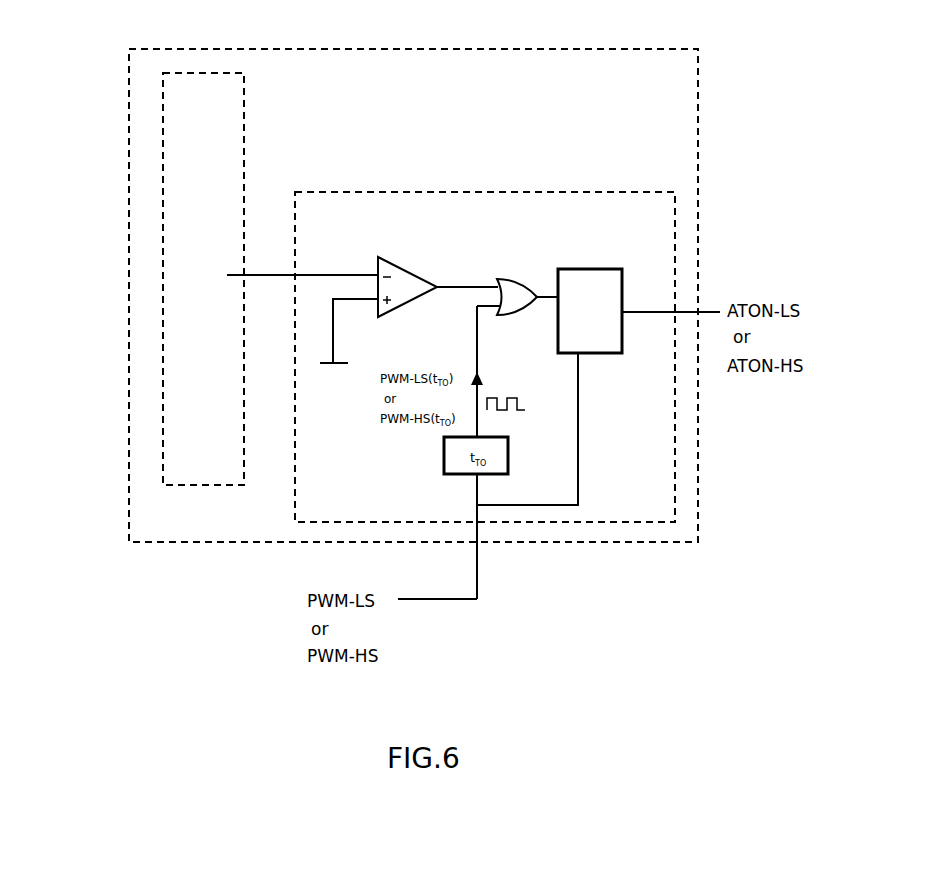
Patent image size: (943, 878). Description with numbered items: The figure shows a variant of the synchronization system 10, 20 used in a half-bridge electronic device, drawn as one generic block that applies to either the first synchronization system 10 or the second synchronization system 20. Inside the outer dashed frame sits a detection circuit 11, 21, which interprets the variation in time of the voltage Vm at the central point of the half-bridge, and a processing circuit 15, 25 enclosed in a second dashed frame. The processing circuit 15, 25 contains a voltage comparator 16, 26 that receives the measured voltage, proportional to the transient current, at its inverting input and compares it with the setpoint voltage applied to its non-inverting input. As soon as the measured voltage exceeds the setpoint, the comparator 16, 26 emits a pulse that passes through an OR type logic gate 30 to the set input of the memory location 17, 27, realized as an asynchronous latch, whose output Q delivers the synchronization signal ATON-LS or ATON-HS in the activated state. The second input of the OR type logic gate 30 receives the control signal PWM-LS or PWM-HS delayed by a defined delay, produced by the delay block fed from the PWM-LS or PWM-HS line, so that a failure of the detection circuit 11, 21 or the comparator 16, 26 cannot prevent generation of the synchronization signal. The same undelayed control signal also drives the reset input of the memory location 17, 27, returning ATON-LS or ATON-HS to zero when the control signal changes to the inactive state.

The first synchronization system 10 is at (413, 277).
The second synchronization system 20 is at (312, 47).
The detection circuit 11 is at (137, 279).
The detection circuit 21 is at (163, 275).
The first processing circuit 15 is at (480, 338).
The second processing circuit 25 is at (403, 192).
The voltage comparator 16 is at (387, 304).
The voltage comparator 26 is at (410, 268).
The OR type logic gate 30 is at (505, 277).
The memory location 17 is at (610, 281).
The memory point 27 is at (592, 268).